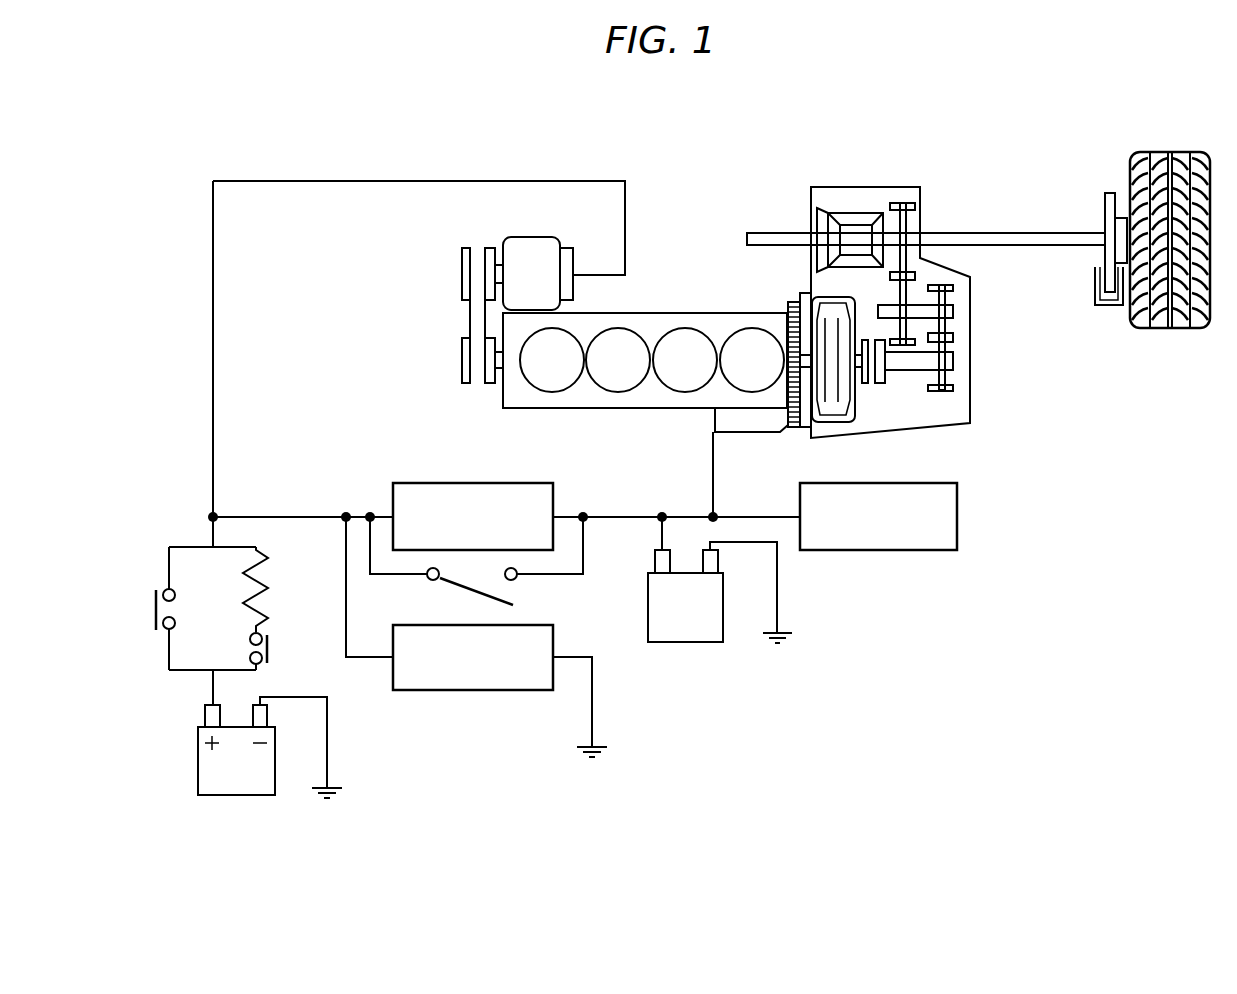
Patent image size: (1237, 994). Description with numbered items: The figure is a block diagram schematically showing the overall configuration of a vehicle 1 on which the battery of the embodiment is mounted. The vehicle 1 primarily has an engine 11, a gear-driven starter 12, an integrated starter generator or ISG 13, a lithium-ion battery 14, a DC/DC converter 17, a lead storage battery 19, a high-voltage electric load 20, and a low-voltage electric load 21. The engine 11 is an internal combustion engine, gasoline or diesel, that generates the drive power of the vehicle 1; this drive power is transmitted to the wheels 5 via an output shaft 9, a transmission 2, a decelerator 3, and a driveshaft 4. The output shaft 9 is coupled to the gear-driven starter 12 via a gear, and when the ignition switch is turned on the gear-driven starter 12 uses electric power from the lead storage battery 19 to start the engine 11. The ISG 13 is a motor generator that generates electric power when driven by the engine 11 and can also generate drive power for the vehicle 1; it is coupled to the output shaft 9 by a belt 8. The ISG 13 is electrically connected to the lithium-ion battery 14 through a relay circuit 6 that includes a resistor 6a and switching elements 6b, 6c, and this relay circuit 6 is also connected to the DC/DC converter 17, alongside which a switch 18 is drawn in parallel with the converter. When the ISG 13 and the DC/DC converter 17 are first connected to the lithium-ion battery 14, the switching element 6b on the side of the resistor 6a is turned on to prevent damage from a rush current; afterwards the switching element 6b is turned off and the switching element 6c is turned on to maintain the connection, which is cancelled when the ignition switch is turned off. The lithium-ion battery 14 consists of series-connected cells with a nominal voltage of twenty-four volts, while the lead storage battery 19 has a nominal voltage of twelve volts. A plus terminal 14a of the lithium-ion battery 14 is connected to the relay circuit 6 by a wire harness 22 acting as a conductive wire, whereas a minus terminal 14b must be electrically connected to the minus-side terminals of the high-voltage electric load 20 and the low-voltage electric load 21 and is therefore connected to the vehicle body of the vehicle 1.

The vehicle 1 is at (714, 158).
The transmission 2 is at (900, 405).
The decelerator 3 is at (857, 207).
The driveshaft 4 is at (955, 233).
The wheels 5 is at (1163, 152).
The relay circuit 6 is at (178, 510).
The resistor 6a is at (268, 583).
The switching element 6b is at (268, 652).
The switching element 6c is at (153, 608).
The belt 8 is at (470, 313).
The output shaft 9 is at (462, 358).
The engine 11 is at (675, 310).
The gear-driven starter 12 is at (743, 432).
The integrated starter generator (ISG) 13 is at (540, 237).
The lithium-ion battery 14 is at (236, 795).
The plus terminal 14a is at (205, 720).
The minus terminal 14b is at (267, 712).
The DC/DC converter 17 is at (470, 483).
The bypass switch 18 is at (455, 588).
The lead storage battery 19 is at (685, 642).
The high-voltage electric load 20 is at (468, 690).
The low-voltage electric load 21 is at (885, 550).
The wire harness 22 is at (213, 688).